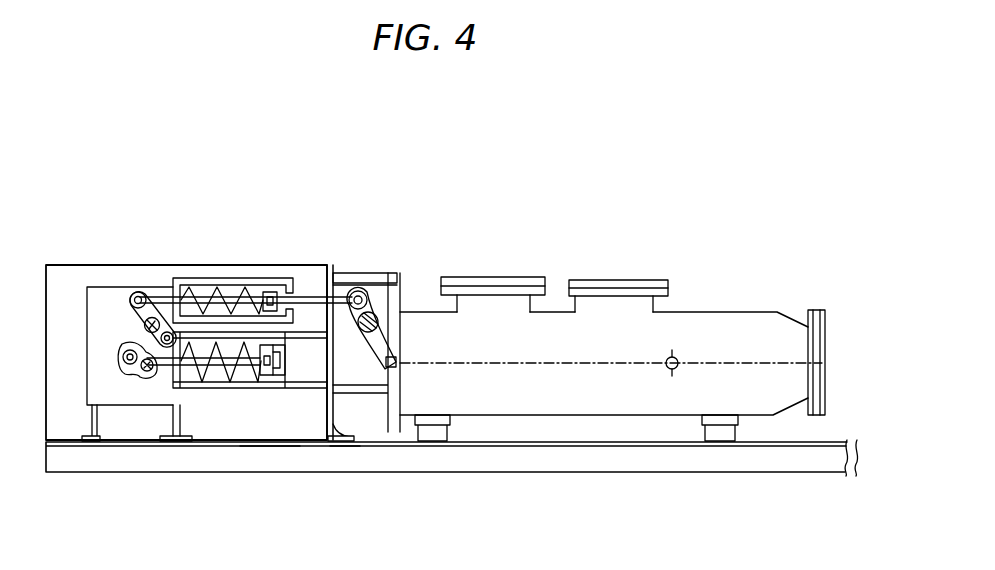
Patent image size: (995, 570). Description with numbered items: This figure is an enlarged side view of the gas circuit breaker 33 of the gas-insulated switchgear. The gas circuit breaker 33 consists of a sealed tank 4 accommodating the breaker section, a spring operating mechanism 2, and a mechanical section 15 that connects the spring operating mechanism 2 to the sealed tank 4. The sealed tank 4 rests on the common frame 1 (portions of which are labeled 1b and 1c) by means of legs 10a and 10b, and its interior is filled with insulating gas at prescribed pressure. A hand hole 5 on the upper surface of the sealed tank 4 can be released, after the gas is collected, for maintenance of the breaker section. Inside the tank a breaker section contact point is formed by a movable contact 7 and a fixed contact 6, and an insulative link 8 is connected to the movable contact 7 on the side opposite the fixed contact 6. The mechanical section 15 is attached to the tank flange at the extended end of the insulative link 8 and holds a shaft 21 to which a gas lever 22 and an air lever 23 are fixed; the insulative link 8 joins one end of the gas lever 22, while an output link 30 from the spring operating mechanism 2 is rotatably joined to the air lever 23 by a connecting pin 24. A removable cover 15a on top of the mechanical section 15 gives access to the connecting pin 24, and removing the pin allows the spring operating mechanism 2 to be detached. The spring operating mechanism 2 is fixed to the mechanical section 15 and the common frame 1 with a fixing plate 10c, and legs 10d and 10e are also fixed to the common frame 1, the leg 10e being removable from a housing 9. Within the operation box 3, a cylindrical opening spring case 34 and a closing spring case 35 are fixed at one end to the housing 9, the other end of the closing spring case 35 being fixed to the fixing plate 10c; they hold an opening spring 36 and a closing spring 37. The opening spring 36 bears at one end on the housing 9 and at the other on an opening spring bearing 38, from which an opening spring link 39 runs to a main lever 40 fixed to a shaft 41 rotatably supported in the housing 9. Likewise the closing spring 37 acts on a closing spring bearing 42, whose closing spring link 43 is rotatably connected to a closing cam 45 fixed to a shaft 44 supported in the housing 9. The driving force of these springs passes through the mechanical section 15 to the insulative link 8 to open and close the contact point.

The common frame 1 is at (790, 462).
The base plate portion 1b is at (266, 446).
The base plate portion 1c is at (345, 446).
The spring operating mechanism 2 is at (246, 178).
The operation box 3 is at (76, 265).
The sealed tank 4 is at (740, 311).
The hand hole 5 is at (632, 280).
The fixed contact 6 is at (676, 354).
The movable contact 7 is at (667, 358).
The insulative link 8 is at (558, 362).
The housing 9 is at (111, 287).
The leg 10a is at (722, 443).
The leg 10b is at (433, 442).
The fixing plate 10c is at (325, 418).
The leg 10d is at (165, 447).
The leg 10e is at (87, 444).
The mechanical section 15 is at (374, 394).
The removable cover 15a is at (345, 275).
The shaft 21 is at (374, 312).
The gas lever 22 is at (383, 348).
The air lever 23 is at (378, 280).
The connecting pin 24 is at (365, 282).
The output link 30 is at (311, 280).
The gas circuit breaker 33 is at (377, 125).
The opening spring case 34 is at (186, 278).
The closing spring case 35 is at (213, 390).
The opening spring 36 is at (215, 278).
The closing spring 37 is at (237, 390).
The opening spring bearing 38 is at (281, 282).
The opening spring link 39 is at (158, 296).
The main lever 40 is at (137, 312).
The shaft 41 is at (149, 330).
The closing spring bearing 42 is at (283, 348).
The closing spring link 43 is at (196, 392).
The shaft 44 is at (142, 378).
The closing cam 45 is at (120, 375).